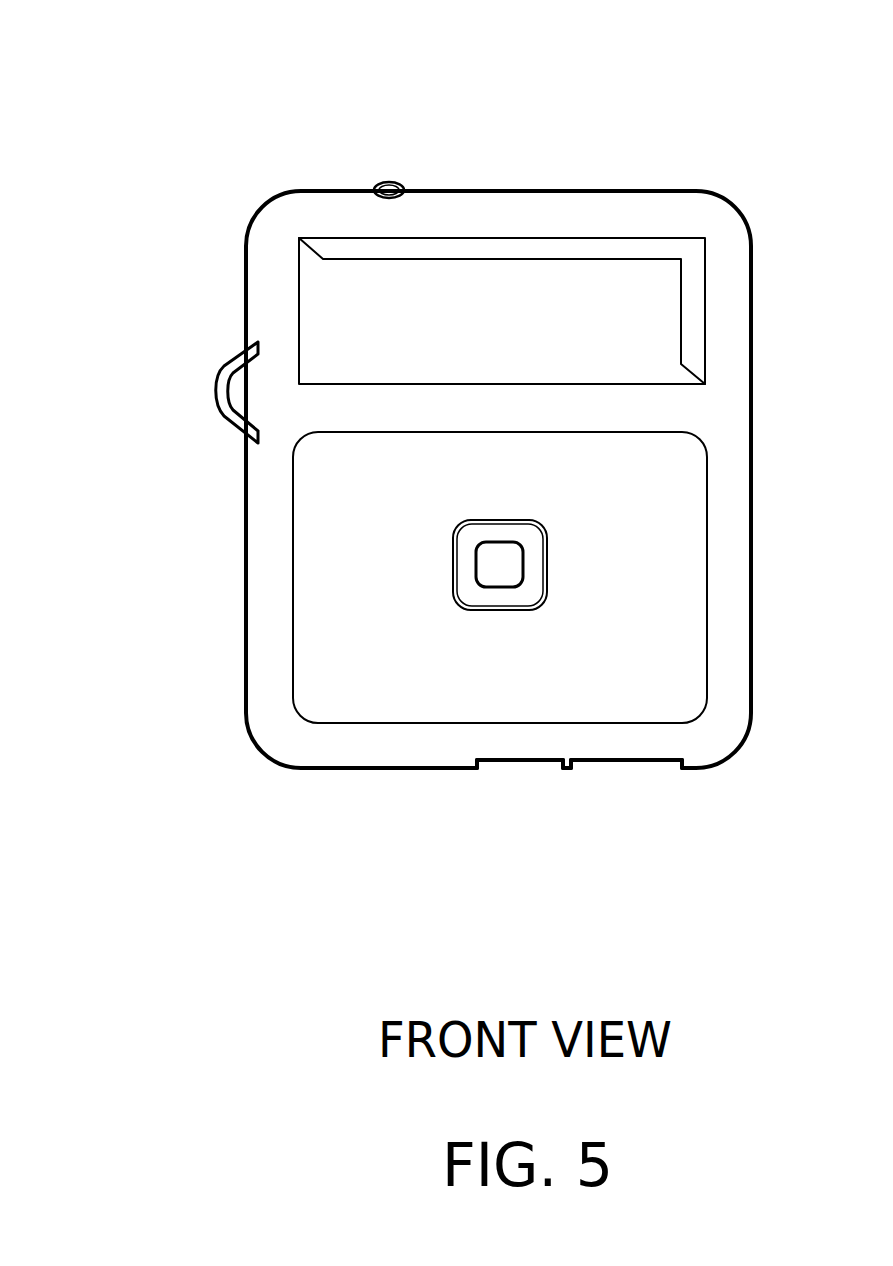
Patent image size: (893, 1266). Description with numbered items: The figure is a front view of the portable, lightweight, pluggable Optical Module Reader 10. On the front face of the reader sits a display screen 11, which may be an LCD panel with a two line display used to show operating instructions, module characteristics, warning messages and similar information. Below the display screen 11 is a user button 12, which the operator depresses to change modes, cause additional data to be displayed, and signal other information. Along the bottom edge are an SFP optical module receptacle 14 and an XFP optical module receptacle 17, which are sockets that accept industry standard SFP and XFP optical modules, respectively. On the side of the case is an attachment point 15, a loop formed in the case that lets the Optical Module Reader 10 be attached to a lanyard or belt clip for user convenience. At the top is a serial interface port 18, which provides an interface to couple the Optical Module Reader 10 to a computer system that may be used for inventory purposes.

The Optical Module Reader 10 is at (703, 64).
The display screen 11 is at (662, 303).
The user button 12 is at (487, 573).
The SFP optical module receptacle 14 is at (530, 776).
The attachment point 15 is at (220, 398).
The XFP optical module receptacle 17 is at (636, 768).
The serial interface port 18 is at (390, 182).